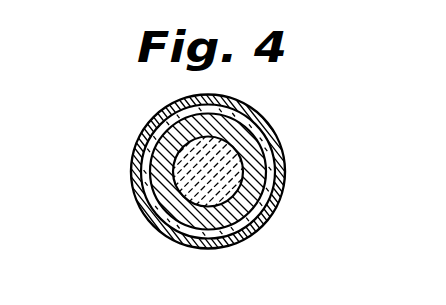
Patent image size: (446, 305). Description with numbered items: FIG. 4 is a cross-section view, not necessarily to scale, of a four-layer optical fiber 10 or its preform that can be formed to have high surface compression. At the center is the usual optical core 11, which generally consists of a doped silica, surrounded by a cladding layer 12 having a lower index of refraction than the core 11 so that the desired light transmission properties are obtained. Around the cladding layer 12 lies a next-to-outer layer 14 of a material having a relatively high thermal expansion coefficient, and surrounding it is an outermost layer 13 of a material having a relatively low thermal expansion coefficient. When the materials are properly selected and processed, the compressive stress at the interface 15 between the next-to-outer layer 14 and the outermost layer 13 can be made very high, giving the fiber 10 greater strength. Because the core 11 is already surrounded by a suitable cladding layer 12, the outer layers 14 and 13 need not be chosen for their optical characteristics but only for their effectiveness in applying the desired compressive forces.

The optical fiber 10 is at (203, 166).
The core 11 is at (238, 160).
The cladding layer 12 is at (260, 173).
The outermost layer 13 is at (172, 112).
The next-to-outer layer 14 is at (150, 127).
The interface 15 is at (262, 126).